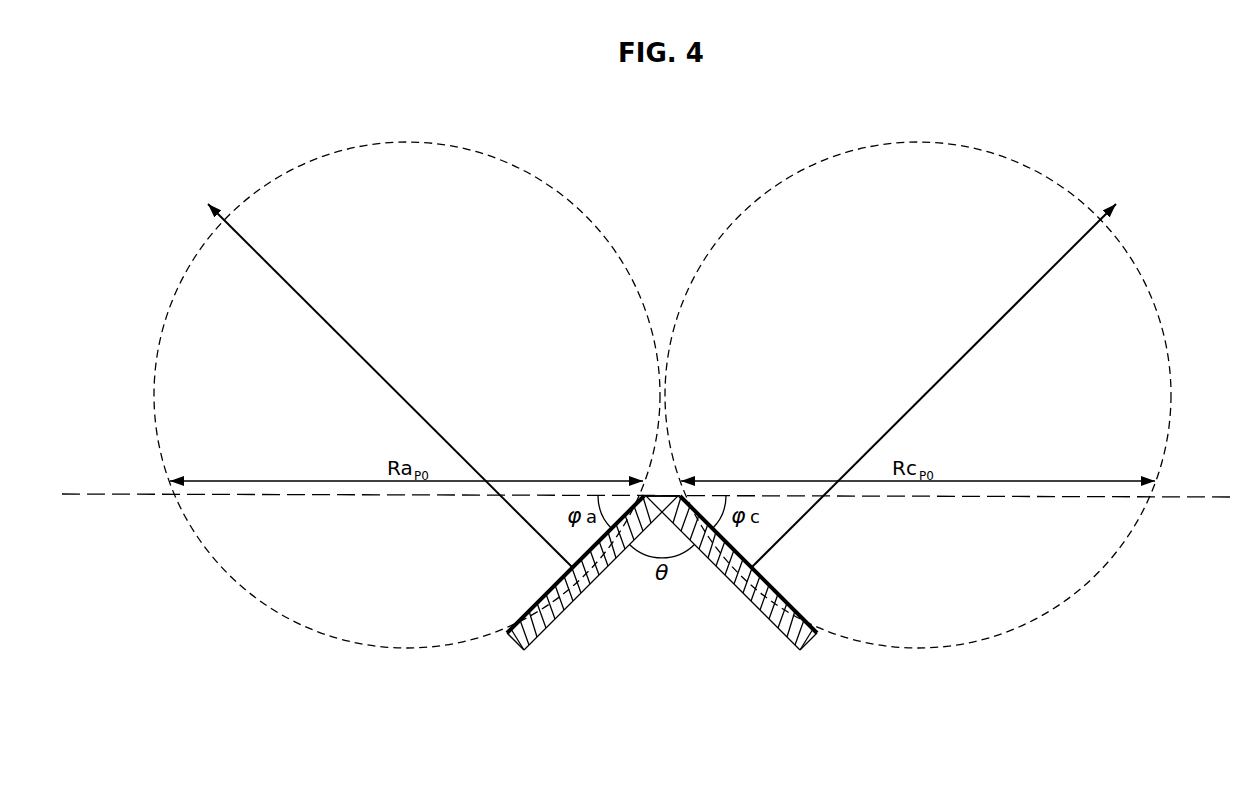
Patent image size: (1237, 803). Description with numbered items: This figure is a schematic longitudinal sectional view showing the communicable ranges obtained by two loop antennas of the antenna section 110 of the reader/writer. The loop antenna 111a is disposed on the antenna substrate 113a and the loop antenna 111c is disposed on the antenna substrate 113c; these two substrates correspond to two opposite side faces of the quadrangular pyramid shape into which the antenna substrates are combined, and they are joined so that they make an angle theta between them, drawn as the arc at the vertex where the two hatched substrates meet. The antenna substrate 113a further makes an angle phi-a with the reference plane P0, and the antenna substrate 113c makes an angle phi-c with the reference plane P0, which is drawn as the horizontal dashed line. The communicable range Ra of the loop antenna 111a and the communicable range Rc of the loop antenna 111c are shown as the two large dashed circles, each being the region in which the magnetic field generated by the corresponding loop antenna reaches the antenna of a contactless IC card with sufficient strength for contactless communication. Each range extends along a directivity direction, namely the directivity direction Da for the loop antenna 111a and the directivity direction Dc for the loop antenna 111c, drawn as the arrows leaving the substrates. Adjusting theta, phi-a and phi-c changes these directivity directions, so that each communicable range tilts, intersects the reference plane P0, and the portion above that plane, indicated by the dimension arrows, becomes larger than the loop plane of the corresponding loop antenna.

The antenna section 110 is at (642, 611).
The loop antenna 111a is at (523, 613).
The loop antenna 111c is at (806, 613).
The antenna substrate 113a is at (540, 634).
The antenna substrate 113c is at (781, 635).
The communicable range Ra is at (403, 142).
The communicable range Rc is at (913, 142).
The directivity direction Da is at (384, 372).
The directivity direction Dc is at (938, 373).
The reference plane P0 is at (1202, 494).